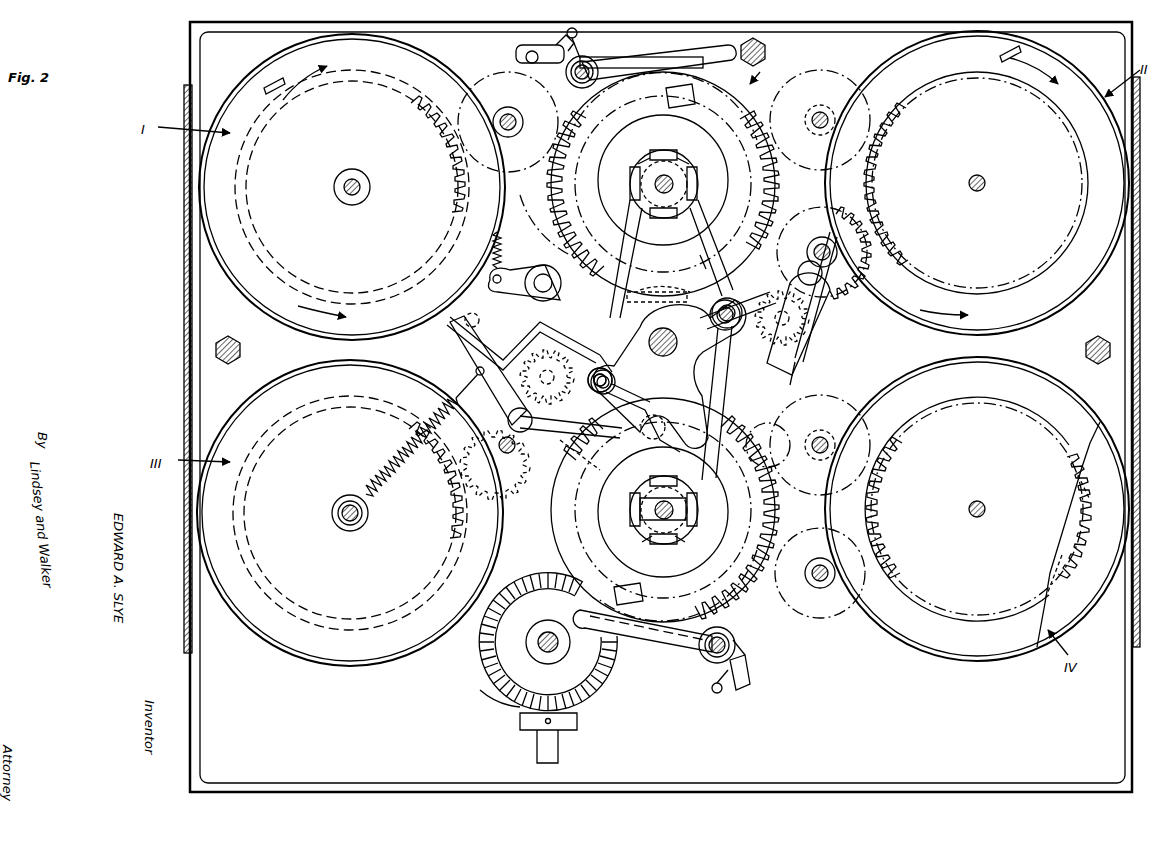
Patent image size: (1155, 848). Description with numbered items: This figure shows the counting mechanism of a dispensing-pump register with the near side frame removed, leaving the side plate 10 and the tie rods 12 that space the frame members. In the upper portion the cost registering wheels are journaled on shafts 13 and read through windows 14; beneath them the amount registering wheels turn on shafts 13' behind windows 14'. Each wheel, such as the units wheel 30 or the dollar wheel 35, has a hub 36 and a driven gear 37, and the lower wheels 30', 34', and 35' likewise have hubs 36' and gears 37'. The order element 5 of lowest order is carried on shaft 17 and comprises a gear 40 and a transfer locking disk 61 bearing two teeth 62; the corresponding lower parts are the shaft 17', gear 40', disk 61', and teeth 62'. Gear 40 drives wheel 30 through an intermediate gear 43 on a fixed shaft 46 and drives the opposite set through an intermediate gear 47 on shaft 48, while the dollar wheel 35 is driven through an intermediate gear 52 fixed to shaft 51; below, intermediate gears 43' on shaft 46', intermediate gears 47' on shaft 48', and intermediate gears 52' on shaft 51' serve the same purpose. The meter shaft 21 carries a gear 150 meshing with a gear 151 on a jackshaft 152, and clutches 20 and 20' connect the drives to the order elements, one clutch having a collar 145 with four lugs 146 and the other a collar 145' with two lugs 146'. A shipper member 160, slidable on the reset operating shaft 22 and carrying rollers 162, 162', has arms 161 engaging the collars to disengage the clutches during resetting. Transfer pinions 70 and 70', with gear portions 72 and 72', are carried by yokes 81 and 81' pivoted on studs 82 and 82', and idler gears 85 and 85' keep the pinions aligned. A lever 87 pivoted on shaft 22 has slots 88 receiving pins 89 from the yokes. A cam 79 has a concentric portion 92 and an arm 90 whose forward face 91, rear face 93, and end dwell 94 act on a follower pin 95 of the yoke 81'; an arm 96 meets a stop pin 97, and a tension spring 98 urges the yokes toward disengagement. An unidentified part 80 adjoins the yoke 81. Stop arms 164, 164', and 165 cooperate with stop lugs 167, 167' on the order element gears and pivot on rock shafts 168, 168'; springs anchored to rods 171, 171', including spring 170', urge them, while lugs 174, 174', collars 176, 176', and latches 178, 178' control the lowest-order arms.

The base plate 10 is at (200, 280).
The mounting nut 12 is at (766, 50).
The dial shaft 13 is at (660, 175).
The dial shaft 13' is at (649, 506).
The side flange 14 is at (166, 369).
The side flange 14' is at (1144, 362).
The main shaft 17 is at (660, 179).
The main shaft 17' is at (674, 510).
The cam disc 20 is at (663, 184).
The cam disc 20' is at (667, 510).
The reset shaft 21 is at (536, 752).
The cam hub 22 is at (670, 374).
The register dial 30 is at (352, 187).
The register dial 30' is at (350, 513).
The dial gear 34' is at (1077, 534).
The register dial 35 is at (977, 183).
The register dial 35' is at (977, 509).
The dial hub 36 is at (336, 187).
The dial hub 36' is at (337, 508).
The dial ring 37 is at (667, 183).
The dial ring 37' is at (663, 509).
The gear plate 40 is at (663, 184).
The gear plate 40' is at (678, 510).
The dial gear teeth 43 is at (352, 187).
The dial gear teeth 43' is at (350, 513).
The pinion 46 is at (508, 122).
The pinion 46' is at (474, 465).
The idler gear 47 is at (824, 107).
The idler gear 47' is at (823, 434).
The idler stud 48 is at (820, 110).
The idler stud 48' is at (820, 433).
The gear unit 5 is at (526, 548).
The pinion stud 51 is at (822, 252).
The pinion stud 51' is at (820, 573).
The dial gear teeth 52 is at (893, 184).
The dial gear teeth 52' is at (889, 507).
The main gear 61 is at (649, 193).
The main gear 61' is at (690, 525).
The pawl lever 62 is at (525, 264).
The pawl lever 62' is at (771, 441).
The lever arm 70 is at (745, 289).
The lever arm 70' is at (523, 343).
The link 72 is at (816, 297).
The link 72' is at (556, 351).
The cam follower 79 is at (662, 300).
The lever tail 80 is at (796, 370).
The pawl lever 81 is at (808, 318).
The spring hook 81' is at (458, 382).
The pawl gear 82 is at (848, 253).
The pivot pin 82' is at (514, 456).
The pinion 85 is at (800, 318).
The pinion 85' is at (532, 377).
The pin 87 is at (698, 280).
The pivot 88 is at (728, 296).
The pivot 89 is at (600, 370).
The link 90 is at (644, 421).
The link 91 is at (571, 435).
The slot 92 is at (648, 300).
The pin 93 is at (668, 430).
The link 94 is at (712, 375).
The link 95 is at (580, 458).
The bell crank 96 is at (470, 342).
The stop pin 97 is at (452, 332).
The spring 98 is at (400, 470).
The notch 145 is at (691, 146).
The notch 145' is at (632, 543).
The notch 146 is at (654, 146).
The notch 146' is at (666, 552).
The ratchet wheel 150 is at (500, 704).
The ratchet teeth 151 is at (486, 680).
The ratchet shaft 152 is at (536, 641).
The yoke arms 160 is at (696, 222).
The clutch lugs 161 is at (632, 165).
The pivot stud 162 is at (682, 304).
The pivot stud 162' is at (586, 400).
The slide bar 164 is at (641, 90).
The slide bar 164' is at (647, 651).
The guide arc 165 is at (630, 100).
The block 167 is at (697, 104).
The block 167' is at (615, 587).
The pivot 168 is at (589, 60).
The pivot 168' is at (702, 661).
The arm 170' is at (642, 653).
The pin 171 is at (556, 35).
The pin 171' is at (711, 698).
The bracket 174 is at (530, 54).
The bracket 174' is at (756, 643).
The lever 176 is at (538, 40).
The lever 176' is at (757, 672).
The lever 178 is at (659, 61).
The hub 178' is at (551, 653).